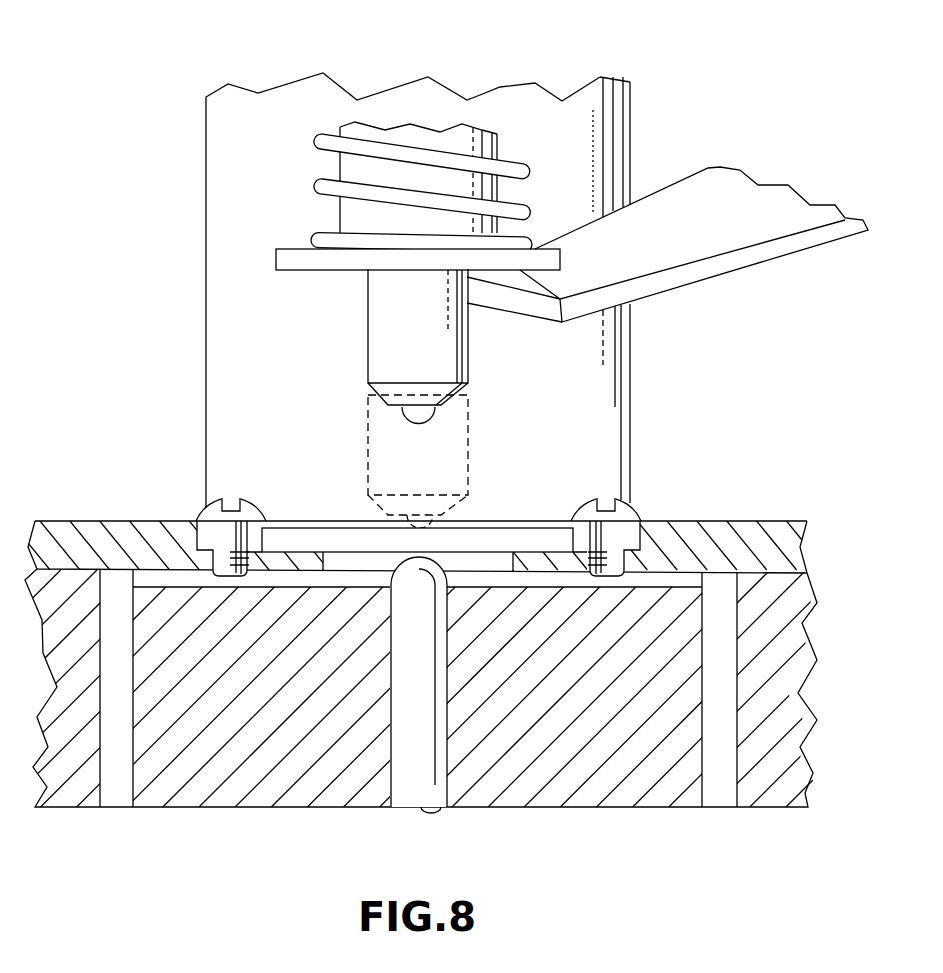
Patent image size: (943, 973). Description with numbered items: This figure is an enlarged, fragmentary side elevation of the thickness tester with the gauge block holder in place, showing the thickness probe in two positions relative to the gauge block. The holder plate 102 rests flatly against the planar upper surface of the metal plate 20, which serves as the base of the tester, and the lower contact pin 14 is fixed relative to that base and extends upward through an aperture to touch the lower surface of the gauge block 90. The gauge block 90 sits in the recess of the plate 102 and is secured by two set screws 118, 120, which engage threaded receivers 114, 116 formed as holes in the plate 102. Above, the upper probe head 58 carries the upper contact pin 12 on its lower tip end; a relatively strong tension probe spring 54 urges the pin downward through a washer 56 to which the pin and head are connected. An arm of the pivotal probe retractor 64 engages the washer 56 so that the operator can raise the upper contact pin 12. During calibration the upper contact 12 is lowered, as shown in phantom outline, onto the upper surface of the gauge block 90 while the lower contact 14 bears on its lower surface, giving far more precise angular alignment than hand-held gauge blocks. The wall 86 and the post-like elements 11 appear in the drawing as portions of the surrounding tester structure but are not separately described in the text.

The support posts 11 is at (117, 790).
The upper contact pin 12 is at (425, 423).
The lower contact pin 14 is at (402, 787).
The metal plate 20 is at (590, 795).
The tension probe spring 54 is at (314, 137).
The washer 56 is at (300, 248).
The upper probe head 58 is at (368, 320).
The pivotal probe retractor 64 is at (737, 238).
The housing wall 86 is at (222, 291).
The gauge block 90 is at (338, 527).
The plate 102 is at (785, 540).
The threaded receiver 114 is at (208, 567).
The threaded receiver 116 is at (636, 570).
The set screw 118 is at (258, 499).
The set screw 120 is at (576, 500).